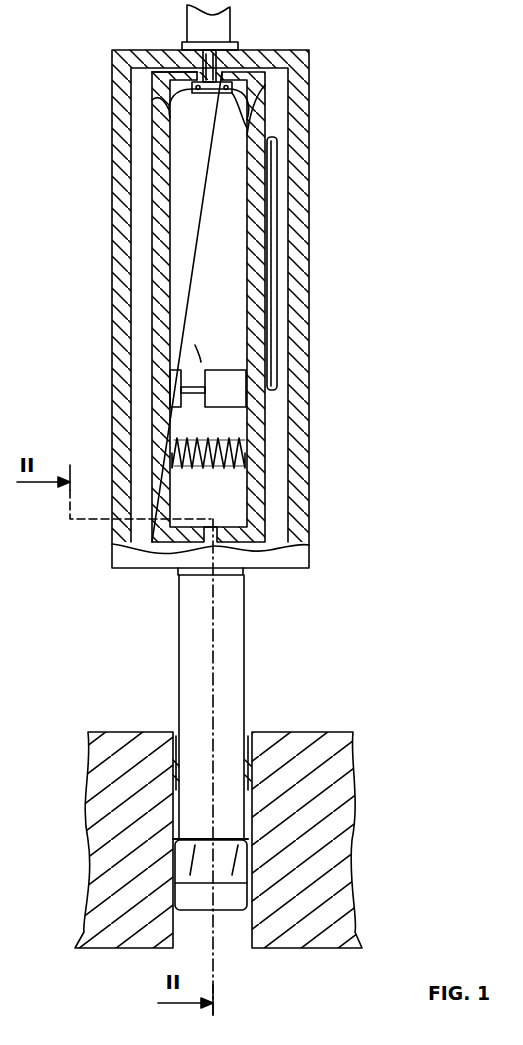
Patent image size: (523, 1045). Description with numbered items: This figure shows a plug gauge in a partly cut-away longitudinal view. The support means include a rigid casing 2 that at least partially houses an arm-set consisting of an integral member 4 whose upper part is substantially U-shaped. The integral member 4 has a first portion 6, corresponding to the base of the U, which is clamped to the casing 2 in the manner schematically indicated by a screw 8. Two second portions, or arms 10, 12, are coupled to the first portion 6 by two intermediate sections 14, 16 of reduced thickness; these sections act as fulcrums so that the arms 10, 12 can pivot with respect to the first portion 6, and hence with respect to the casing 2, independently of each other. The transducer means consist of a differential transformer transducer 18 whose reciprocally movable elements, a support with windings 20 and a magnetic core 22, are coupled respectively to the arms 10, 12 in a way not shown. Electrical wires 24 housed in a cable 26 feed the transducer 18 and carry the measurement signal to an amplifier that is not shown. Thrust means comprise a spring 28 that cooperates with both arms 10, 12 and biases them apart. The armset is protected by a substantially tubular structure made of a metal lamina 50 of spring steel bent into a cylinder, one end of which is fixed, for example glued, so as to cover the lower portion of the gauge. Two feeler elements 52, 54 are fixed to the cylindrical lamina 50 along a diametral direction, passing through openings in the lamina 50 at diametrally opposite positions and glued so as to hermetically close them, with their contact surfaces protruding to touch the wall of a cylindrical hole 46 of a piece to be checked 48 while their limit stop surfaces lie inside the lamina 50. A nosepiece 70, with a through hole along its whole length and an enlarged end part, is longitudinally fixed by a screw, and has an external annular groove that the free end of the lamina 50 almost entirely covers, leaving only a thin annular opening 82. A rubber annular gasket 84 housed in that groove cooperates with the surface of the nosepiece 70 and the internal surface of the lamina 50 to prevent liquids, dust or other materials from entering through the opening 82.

The casing 2 is at (177, 312).
The integral member 4 is at (112, 190).
The first portion 6 is at (160, 95).
The screw 8 is at (204, 55).
The arm 10 is at (205, 307).
The arm 12 is at (155, 265).
The intermediate section 14 is at (257, 88).
The intermediate section 16 is at (152, 103).
The differential transformer transducer 18 is at (200, 360).
The support with windings 20 is at (232, 392).
The magnetic core 22 is at (182, 400).
The electrical wires 24 is at (270, 253).
The cable 26 is at (223, 25).
The spring 28 is at (210, 468).
The cylindrical hole 46 is at (243, 925).
The piece to be checked 48 is at (320, 925).
The metal lamina 50 is at (228, 663).
The feeler element 52 is at (252, 734).
The feeler element 54 is at (174, 735).
The nosepiece 70 is at (218, 842).
The annular opening 82 is at (165, 911).
The rubber annular gasket 84 is at (146, 928).